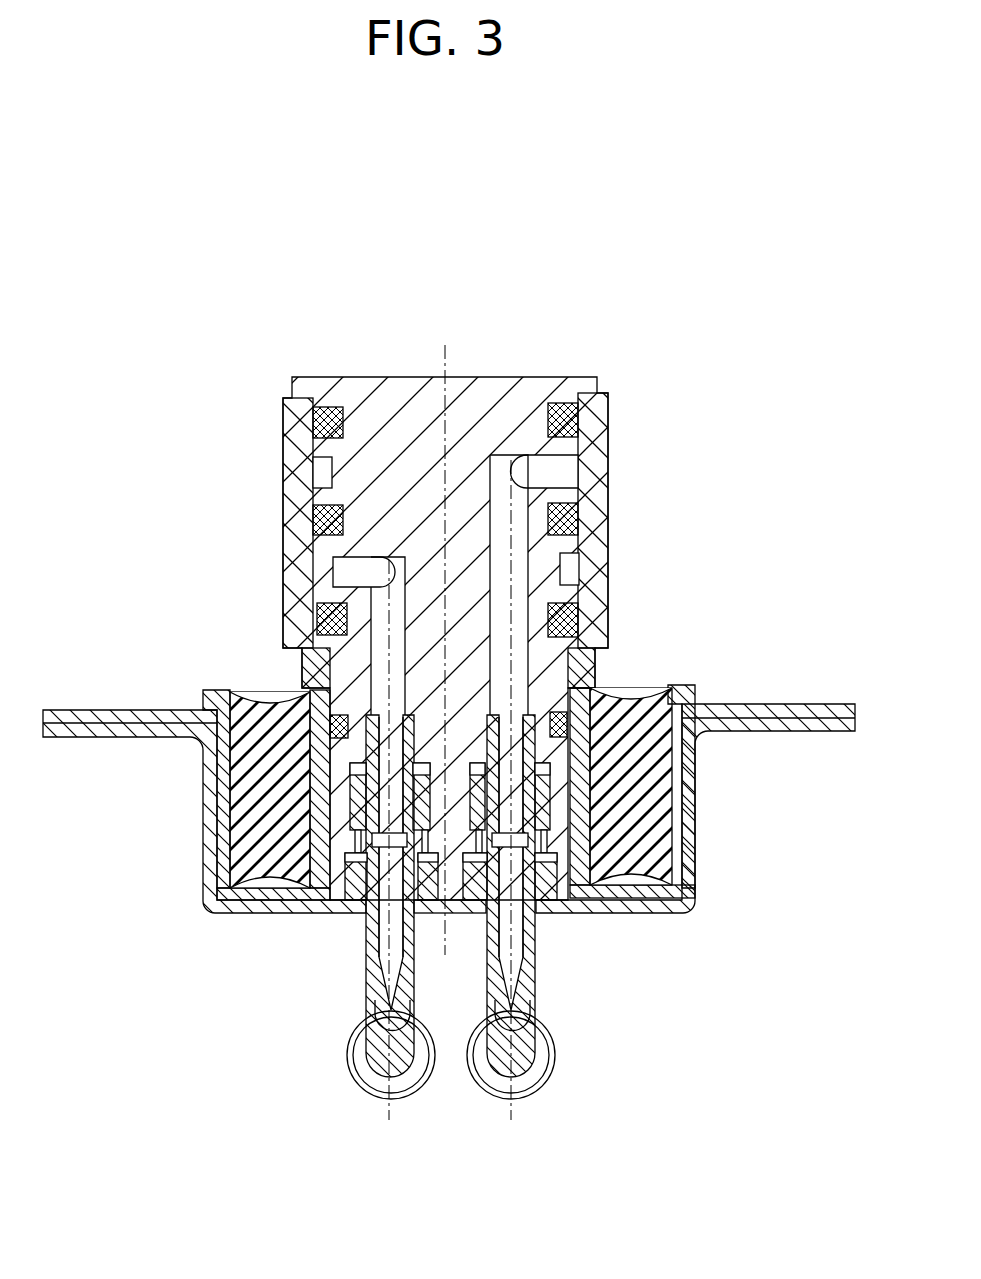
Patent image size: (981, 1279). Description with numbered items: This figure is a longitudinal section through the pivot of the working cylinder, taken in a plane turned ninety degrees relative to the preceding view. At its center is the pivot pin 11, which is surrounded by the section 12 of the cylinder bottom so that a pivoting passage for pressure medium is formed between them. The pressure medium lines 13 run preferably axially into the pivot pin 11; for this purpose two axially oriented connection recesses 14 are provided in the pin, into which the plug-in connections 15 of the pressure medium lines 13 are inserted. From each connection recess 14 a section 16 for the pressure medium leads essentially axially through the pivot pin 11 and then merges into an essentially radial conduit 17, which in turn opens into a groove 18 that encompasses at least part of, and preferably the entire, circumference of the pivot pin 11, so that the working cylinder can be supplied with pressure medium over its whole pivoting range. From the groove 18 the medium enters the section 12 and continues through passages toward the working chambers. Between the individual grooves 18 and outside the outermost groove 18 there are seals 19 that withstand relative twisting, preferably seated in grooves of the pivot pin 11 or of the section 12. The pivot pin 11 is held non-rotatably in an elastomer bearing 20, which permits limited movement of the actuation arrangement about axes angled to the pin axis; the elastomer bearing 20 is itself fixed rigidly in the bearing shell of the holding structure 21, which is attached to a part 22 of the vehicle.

The pivot pin 11 is at (405, 423).
The section of the bottom 12 is at (595, 432).
The pressure medium line 13 is at (388, 957).
The connection recess 14 is at (366, 840).
The plug-in connection 15 is at (357, 848).
The section for the pressure medium 16 is at (395, 680).
The radial conduit 17 is at (535, 460).
The groove 18 is at (327, 475).
The seal 19 is at (313, 412).
The elastomer bearing 20 is at (265, 770).
The holding structure 21 is at (690, 867).
The vehicle part 22 is at (788, 712).